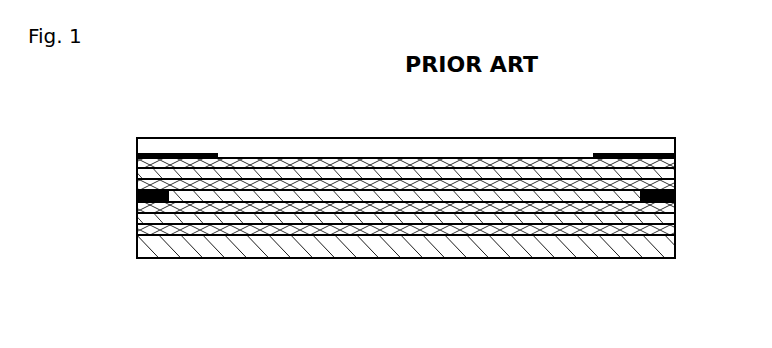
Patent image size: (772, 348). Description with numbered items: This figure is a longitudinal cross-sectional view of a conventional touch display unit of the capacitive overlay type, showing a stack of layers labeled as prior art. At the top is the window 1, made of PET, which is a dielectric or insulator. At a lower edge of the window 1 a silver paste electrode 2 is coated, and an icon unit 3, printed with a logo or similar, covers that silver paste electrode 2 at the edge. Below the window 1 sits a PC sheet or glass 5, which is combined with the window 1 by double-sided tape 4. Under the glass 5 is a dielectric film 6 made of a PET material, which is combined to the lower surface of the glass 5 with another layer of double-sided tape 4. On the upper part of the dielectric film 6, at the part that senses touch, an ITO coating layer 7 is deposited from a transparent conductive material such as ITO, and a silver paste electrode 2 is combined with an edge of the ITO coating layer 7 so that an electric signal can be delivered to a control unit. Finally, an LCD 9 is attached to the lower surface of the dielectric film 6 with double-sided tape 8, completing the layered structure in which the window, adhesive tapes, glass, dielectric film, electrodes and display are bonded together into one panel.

The window 1 is at (322, 145).
The silver paste electrode 2 is at (676, 200).
The icon unit 3 is at (677, 159).
The double-sided tape 4 is at (142, 161).
The PC sheet or glass 5 is at (140, 175).
The dielectric film 6 is at (670, 222).
The ITO coating layer 7 is at (147, 209).
The double-sided tape 8 is at (140, 230).
The LCD 9 is at (615, 250).